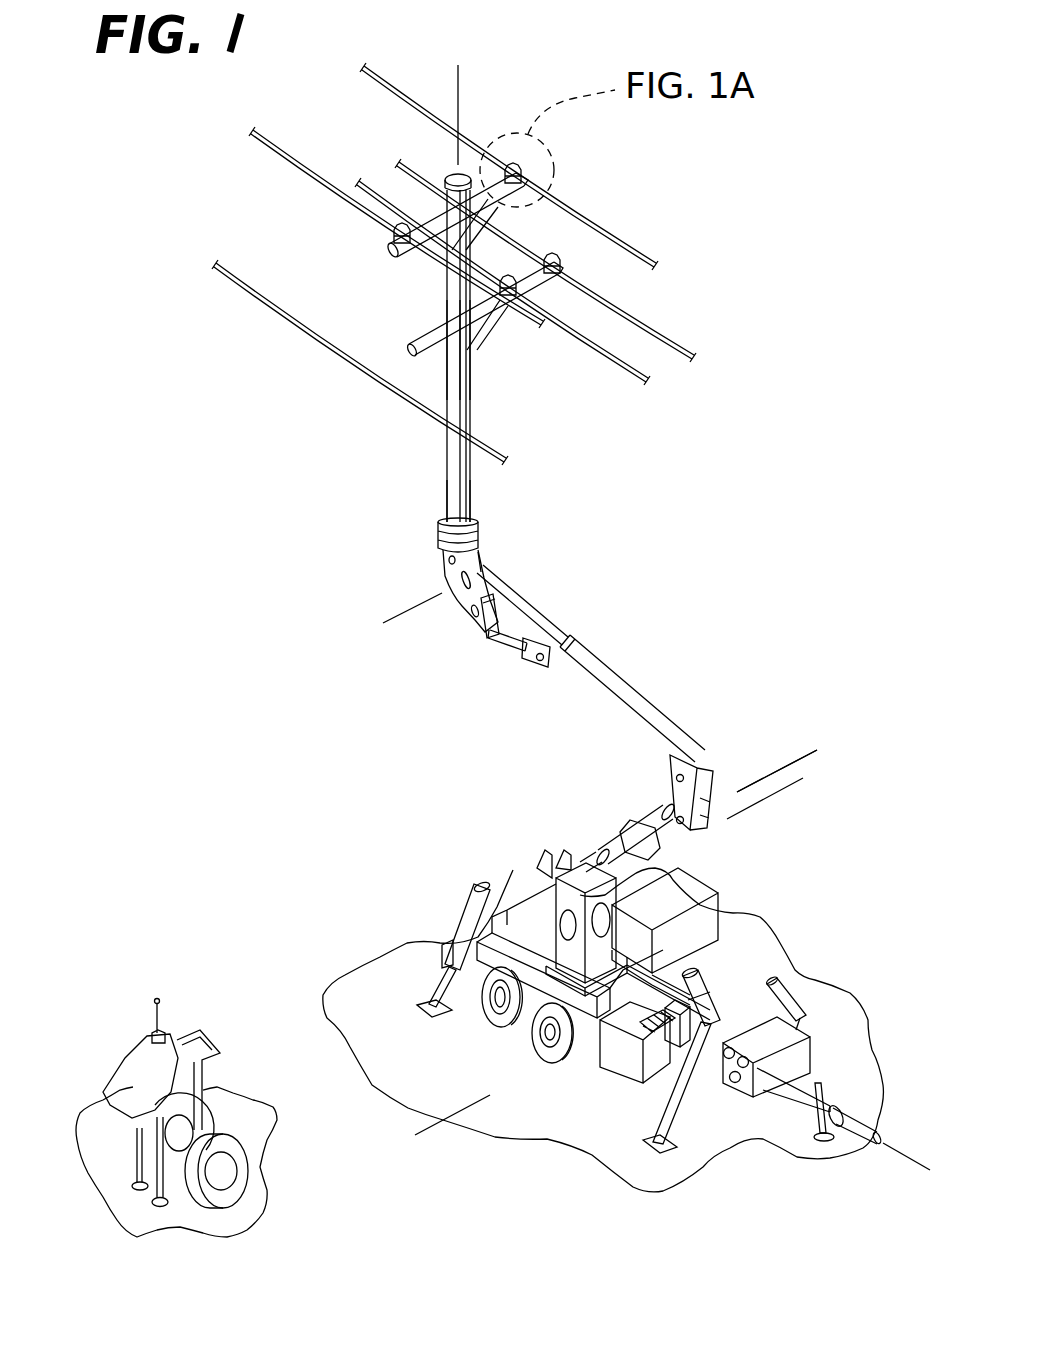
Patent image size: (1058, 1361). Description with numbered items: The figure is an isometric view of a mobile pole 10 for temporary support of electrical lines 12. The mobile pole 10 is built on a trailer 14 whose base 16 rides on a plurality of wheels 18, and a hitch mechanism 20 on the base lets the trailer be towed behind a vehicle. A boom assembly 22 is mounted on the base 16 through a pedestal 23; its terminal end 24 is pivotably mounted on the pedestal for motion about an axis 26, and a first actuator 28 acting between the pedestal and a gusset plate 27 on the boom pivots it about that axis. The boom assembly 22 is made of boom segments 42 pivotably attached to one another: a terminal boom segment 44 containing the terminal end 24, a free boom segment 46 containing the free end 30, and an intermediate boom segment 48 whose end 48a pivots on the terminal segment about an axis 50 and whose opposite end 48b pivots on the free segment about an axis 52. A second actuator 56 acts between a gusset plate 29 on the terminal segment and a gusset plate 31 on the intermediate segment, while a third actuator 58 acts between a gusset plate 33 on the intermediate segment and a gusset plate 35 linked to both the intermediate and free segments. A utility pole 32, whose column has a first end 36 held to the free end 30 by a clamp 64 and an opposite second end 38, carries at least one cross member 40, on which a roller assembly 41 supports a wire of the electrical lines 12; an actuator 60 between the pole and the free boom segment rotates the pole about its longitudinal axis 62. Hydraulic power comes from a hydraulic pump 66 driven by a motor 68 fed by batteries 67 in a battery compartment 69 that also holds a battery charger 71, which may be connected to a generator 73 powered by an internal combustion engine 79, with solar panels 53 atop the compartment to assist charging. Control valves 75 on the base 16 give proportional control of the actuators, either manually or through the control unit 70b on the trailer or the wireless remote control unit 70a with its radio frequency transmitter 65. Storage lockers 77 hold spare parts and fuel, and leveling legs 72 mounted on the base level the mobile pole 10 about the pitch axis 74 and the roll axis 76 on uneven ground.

The mobile pole 10 is at (825, 460).
The electrical lines 12 is at (622, 240).
The trailer 14 is at (833, 1060).
The base 16 is at (510, 923).
The wheels 18 is at (543, 1050).
The hitch mechanism 20 is at (880, 1117).
The boom assembly 22 is at (700, 661).
The pedestal 23 is at (537, 880).
The terminal end 24 is at (563, 877).
The axis 26 is at (368, 960).
The gusset plate 27 is at (610, 850).
The first actuator 28 is at (643, 897).
The gusset plate 29 is at (623, 838).
The free end 30 is at (445, 575).
The gusset plate 31 is at (717, 790).
The utility pole 32 is at (460, 387).
The gusset plate 33 is at (550, 668).
The gusset plate 35 is at (495, 650).
The first end 36 is at (455, 463).
The second end 38 is at (433, 165).
The cross member 40 is at (412, 348).
The roller assembly 41 is at (535, 172).
The boom segments 42 is at (326, 746).
The terminal boom segment 44 is at (593, 843).
The free boom segment 46 is at (500, 562).
The intermediate boom segment 48 is at (620, 690).
The end 48a is at (700, 753).
The opposite end 48b is at (482, 622).
The axis 50 is at (793, 780).
The axis 52 is at (403, 610).
The solar panels 53 is at (690, 983).
The second actuator 56 is at (657, 820).
The third actuator 58 is at (527, 640).
The actuator 60 is at (440, 548).
The longitudinal axis 62 is at (460, 85).
The clamp 64 is at (467, 510).
The radio frequency transmitter 65 is at (162, 1017).
The hydraulic pump 66 is at (488, 1017).
The batteries 67 is at (595, 1068).
The motor 68 is at (500, 997).
The battery compartment 69 is at (607, 1065).
The wireless remote control unit 70a is at (147, 1067).
The control unit 70b is at (767, 1087).
The battery charger 71 is at (645, 1075).
The leveling legs 72 is at (430, 992).
The generator 73 is at (735, 975).
The pitch axis 74 is at (445, 1122).
The control valves 75 is at (805, 978).
The roll axis 76 is at (907, 1163).
The storage lockers 77 is at (700, 930).
The internal combustion engine 79 is at (693, 1080).